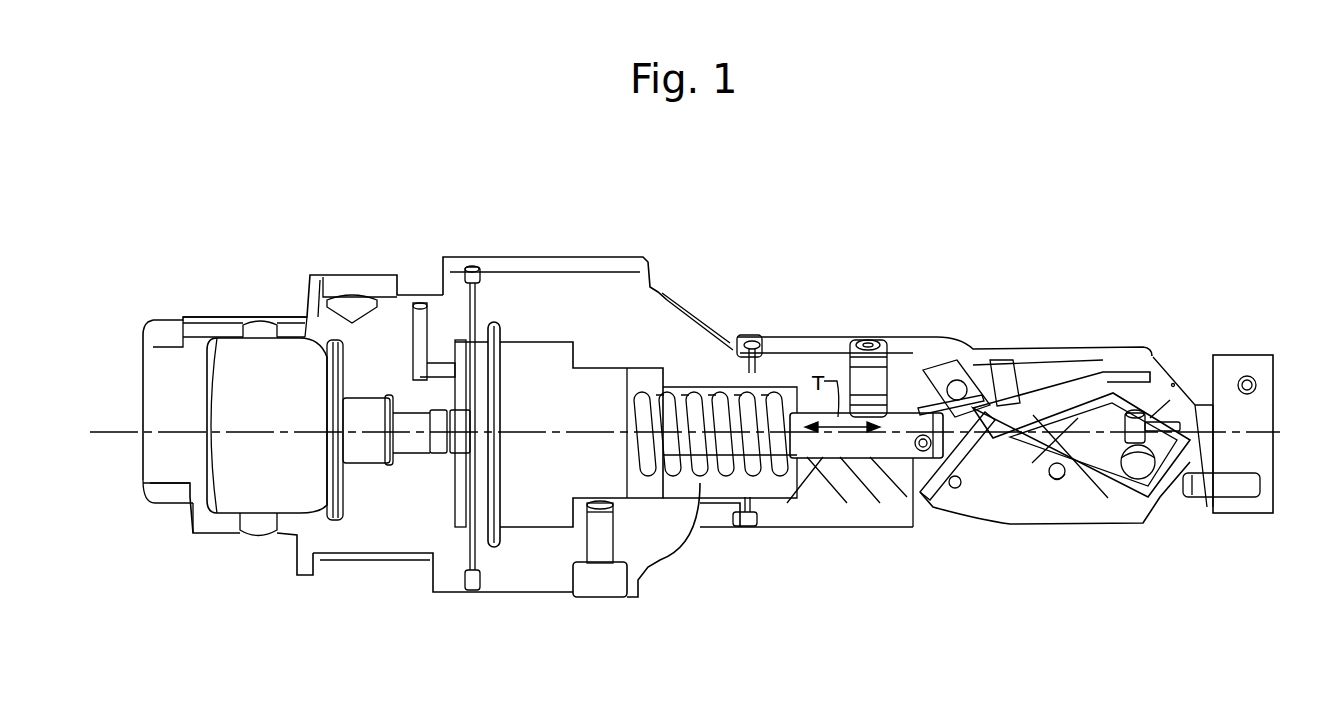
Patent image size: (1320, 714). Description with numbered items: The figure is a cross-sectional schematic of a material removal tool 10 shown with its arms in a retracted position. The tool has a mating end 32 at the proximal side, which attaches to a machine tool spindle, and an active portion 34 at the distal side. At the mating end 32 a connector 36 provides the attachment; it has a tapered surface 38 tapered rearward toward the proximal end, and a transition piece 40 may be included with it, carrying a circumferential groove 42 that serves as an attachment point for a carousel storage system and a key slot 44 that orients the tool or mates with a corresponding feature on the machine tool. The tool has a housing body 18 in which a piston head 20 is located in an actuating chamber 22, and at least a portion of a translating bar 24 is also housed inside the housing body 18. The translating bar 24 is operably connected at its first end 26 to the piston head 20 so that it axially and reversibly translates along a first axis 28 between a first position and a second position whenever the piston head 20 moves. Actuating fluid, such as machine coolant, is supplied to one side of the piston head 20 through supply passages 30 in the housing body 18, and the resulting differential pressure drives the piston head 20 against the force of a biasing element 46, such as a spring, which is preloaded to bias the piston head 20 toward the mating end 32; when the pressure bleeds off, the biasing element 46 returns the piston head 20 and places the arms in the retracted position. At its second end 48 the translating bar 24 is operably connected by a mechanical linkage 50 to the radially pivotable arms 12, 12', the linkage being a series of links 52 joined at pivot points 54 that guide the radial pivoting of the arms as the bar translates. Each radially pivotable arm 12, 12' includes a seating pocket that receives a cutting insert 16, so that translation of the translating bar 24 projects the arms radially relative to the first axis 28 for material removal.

The material removal tool 10 is at (961, 178).
The radially pivotable arm 12 is at (1123, 398).
The radially pivotable arm 12' is at (1055, 521).
The cutting insert 16 is at (933, 368).
The housing body 18 is at (571, 290).
The piston head 20 is at (448, 490).
The actuating chamber 22 is at (434, 560).
The translating bar 24 is at (822, 450).
The first end 26 is at (633, 432).
The first axis 28 is at (97, 430).
The supply passage 30 is at (412, 446).
The mating end 32 is at (124, 448).
The active portion 34 is at (826, 260).
The connector 36 is at (201, 336).
The tapered surface 38 is at (230, 320).
The transition piece 40 is at (299, 214).
The circumferential groove 42 is at (367, 280).
The key slot 44 is at (176, 516).
The biasing element 46 is at (692, 478).
The second end 48 is at (904, 412).
The mechanical linkage 50 is at (988, 382).
The link 52 is at (960, 384).
The pivot point 54 is at (894, 450).